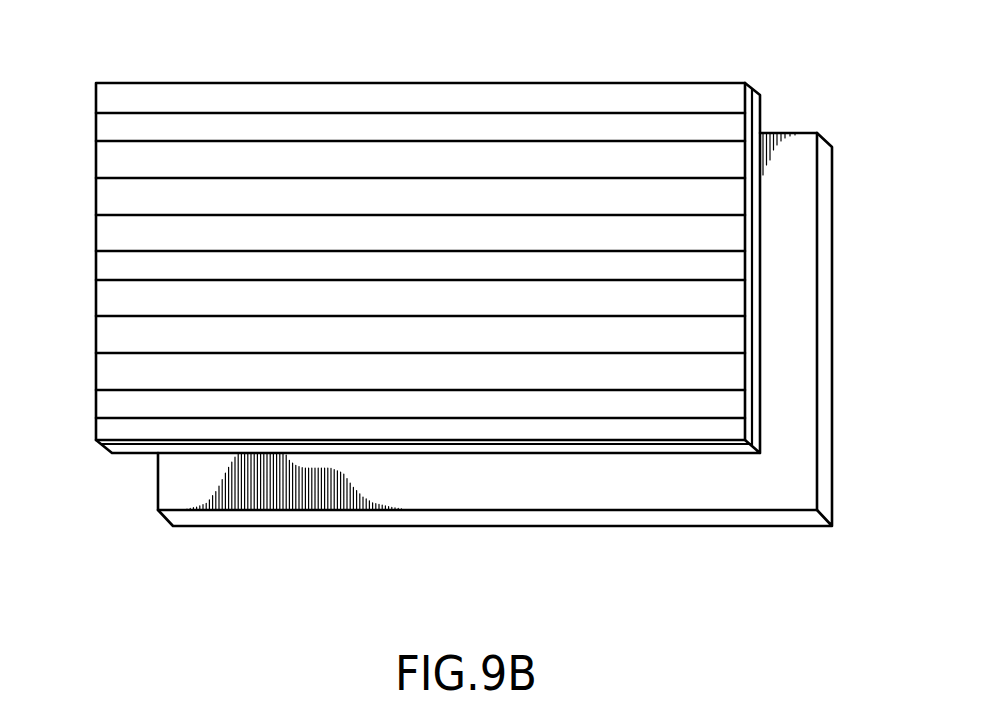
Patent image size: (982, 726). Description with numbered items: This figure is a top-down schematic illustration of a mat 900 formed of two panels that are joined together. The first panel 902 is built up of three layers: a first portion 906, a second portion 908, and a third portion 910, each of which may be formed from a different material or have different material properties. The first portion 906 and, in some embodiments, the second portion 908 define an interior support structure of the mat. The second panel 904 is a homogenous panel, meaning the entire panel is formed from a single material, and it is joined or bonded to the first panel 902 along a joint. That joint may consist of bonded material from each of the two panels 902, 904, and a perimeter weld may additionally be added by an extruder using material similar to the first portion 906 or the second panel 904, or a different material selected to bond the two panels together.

The mat 900 is at (459, 323).
The first panel 902 is at (96, 283).
The second panel 904 is at (822, 320).
The first portion 906 is at (757, 120).
The second portion 908 is at (750, 92).
The third portion 910 is at (628, 98).